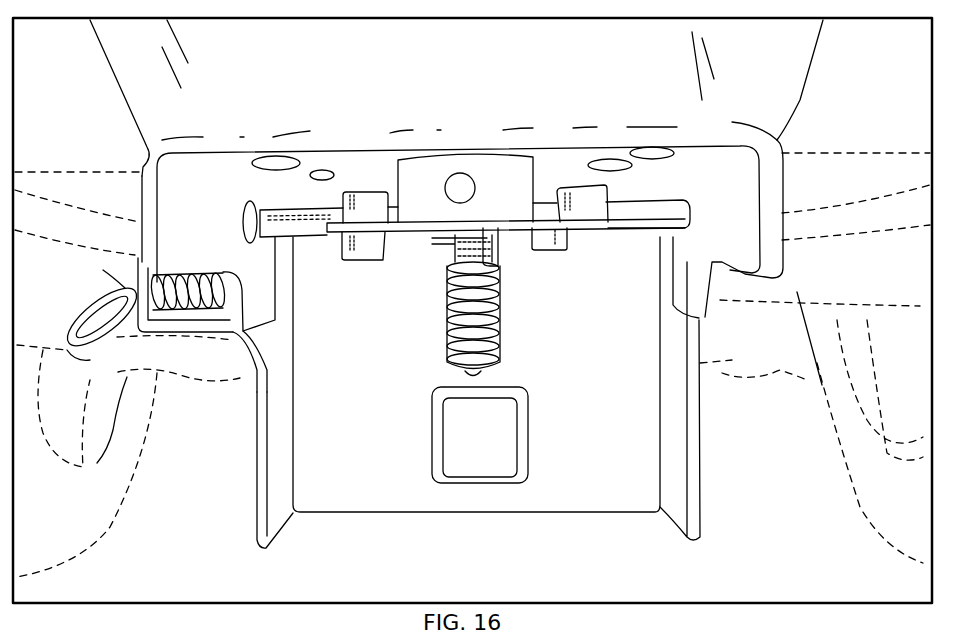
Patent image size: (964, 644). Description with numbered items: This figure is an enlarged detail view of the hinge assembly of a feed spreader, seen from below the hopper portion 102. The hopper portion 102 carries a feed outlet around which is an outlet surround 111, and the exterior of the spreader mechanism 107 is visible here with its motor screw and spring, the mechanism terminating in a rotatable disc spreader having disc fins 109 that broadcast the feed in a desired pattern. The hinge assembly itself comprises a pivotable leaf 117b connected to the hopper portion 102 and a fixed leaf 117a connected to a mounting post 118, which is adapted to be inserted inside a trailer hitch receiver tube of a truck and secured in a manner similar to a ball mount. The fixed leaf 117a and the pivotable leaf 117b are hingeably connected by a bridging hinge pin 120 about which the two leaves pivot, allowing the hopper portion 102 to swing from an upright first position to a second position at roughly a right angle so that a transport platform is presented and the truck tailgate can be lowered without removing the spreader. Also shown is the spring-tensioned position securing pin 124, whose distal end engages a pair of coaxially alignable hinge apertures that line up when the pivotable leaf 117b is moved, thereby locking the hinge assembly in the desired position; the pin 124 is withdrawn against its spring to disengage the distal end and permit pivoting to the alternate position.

The hopper portion 102 is at (487, 69).
The spreader mechanism 107 is at (405, 290).
The disc fins 109 is at (545, 242).
The outlet surround 111 is at (427, 180).
The fixed leaf 117a is at (403, 484).
The pivotable leaf 117b is at (755, 186).
The mounting post 118 is at (488, 460).
The hinge pin 120 is at (302, 228).
The position securing pin 124 is at (127, 283).